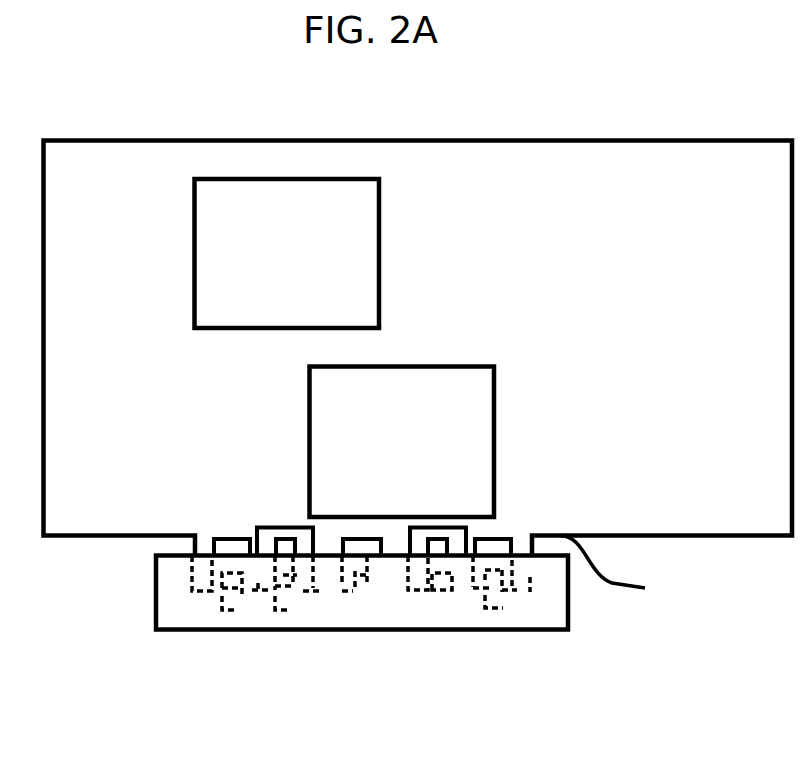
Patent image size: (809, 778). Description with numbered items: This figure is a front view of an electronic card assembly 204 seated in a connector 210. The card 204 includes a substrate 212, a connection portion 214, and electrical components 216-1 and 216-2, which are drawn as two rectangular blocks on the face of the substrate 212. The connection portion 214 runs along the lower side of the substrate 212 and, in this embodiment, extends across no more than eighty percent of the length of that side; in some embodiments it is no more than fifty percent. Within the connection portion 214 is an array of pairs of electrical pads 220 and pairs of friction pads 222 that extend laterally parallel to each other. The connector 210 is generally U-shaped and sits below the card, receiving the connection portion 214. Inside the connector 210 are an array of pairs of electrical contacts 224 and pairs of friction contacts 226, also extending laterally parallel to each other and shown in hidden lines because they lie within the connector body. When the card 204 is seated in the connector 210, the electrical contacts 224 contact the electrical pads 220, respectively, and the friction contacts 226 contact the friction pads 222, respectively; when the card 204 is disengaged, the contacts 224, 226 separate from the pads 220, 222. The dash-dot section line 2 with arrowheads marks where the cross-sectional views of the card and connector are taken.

The electronic card assembly 204 is at (497, 135).
The substrate 212 is at (645, 140).
The electrical component 216-1 is at (494, 438).
The electrical component 216-2 is at (379, 248).
The connection portion 214 is at (632, 572).
The electrical pads 220 is at (230, 535).
The friction pads 222 is at (256, 524).
The connector 210 is at (575, 633).
The electrical contacts 224 is at (228, 605).
The friction contacts 226 is at (296, 612).
The line 2- 2 is at (285, 480).